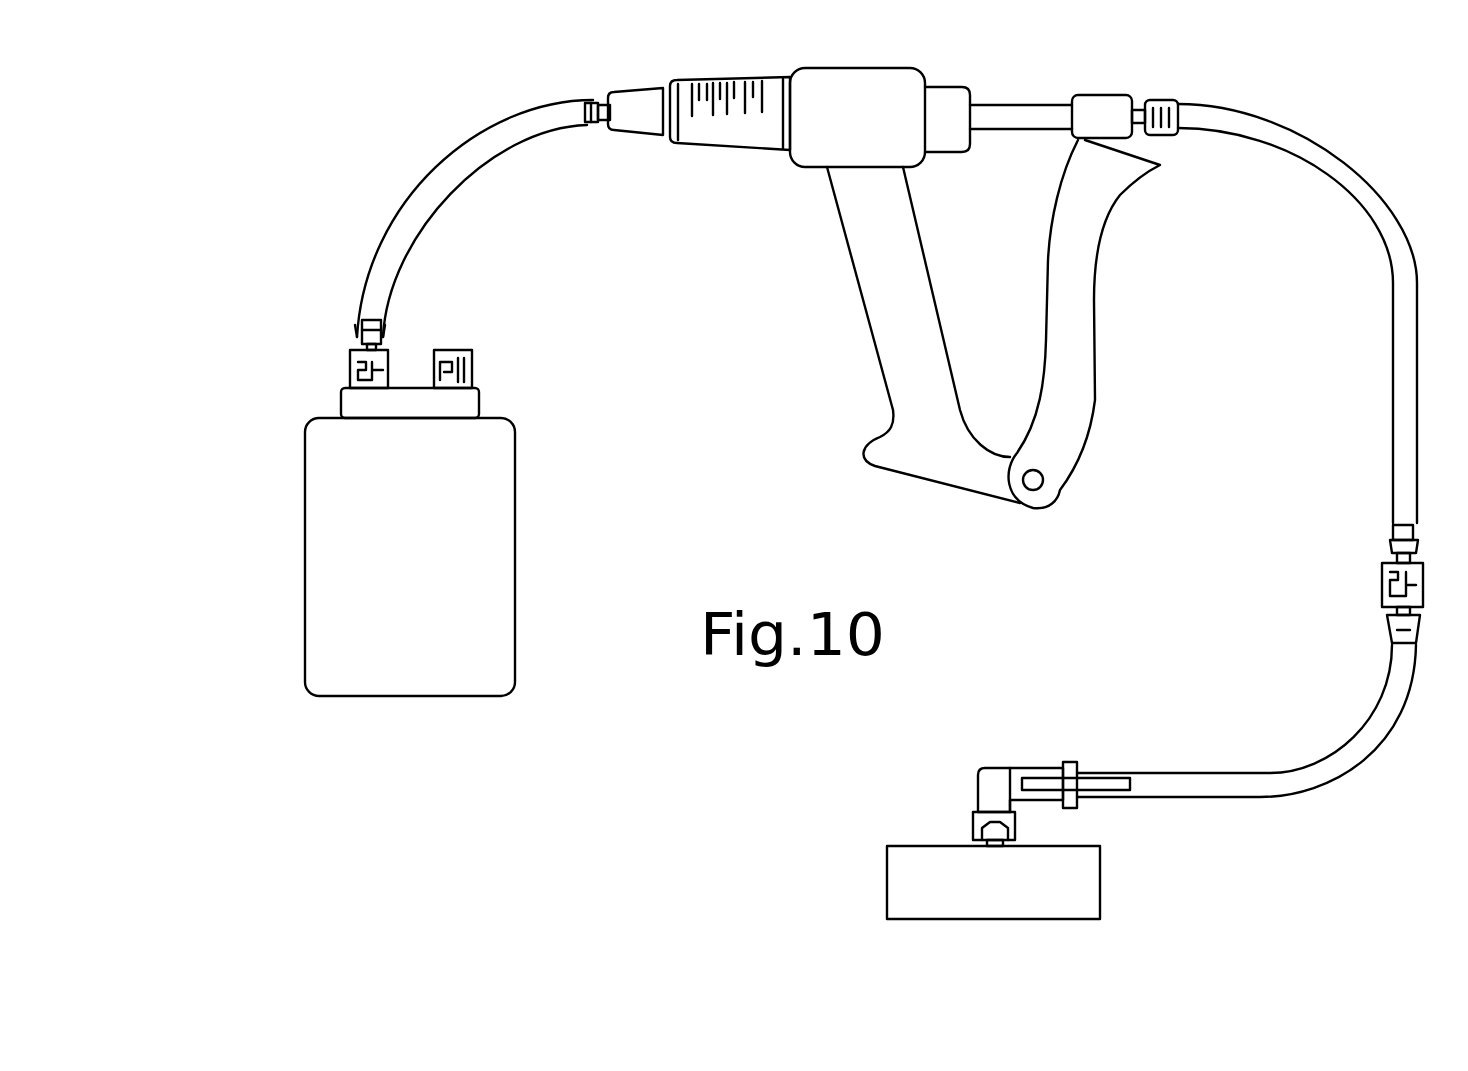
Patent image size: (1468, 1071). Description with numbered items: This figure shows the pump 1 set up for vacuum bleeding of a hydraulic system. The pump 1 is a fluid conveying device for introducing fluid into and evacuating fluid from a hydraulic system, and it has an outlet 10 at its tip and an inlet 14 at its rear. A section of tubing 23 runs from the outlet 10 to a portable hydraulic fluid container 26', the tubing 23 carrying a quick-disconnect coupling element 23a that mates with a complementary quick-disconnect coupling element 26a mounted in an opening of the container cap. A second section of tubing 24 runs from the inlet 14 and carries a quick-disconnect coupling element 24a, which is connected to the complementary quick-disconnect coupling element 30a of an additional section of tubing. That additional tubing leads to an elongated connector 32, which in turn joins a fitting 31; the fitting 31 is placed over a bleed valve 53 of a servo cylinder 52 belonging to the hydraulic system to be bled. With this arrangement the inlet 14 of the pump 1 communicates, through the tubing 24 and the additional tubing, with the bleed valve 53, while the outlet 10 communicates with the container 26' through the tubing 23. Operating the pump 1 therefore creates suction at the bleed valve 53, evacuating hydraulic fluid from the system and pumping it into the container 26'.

The pump 1 is at (825, 303).
The outlet 10 is at (594, 100).
The inlet 14 is at (1160, 100).
The tubing 23 is at (385, 222).
The quick-disconnect coupling element 23a is at (350, 370).
The first quick-disconnect coupling element 26a is at (410, 384).
The portable hydraulic fluid container 26' is at (356, 606).
The tubing 24 is at (1385, 200).
The quick-disconnect coupling element 24a is at (1382, 582).
The quick-disconnect coupling element 30a is at (1403, 625).
The connector 32 is at (1150, 772).
The fitting 31 is at (995, 768).
The bleed valve 53 is at (1015, 820).
The servo cylinder 52 is at (887, 880).